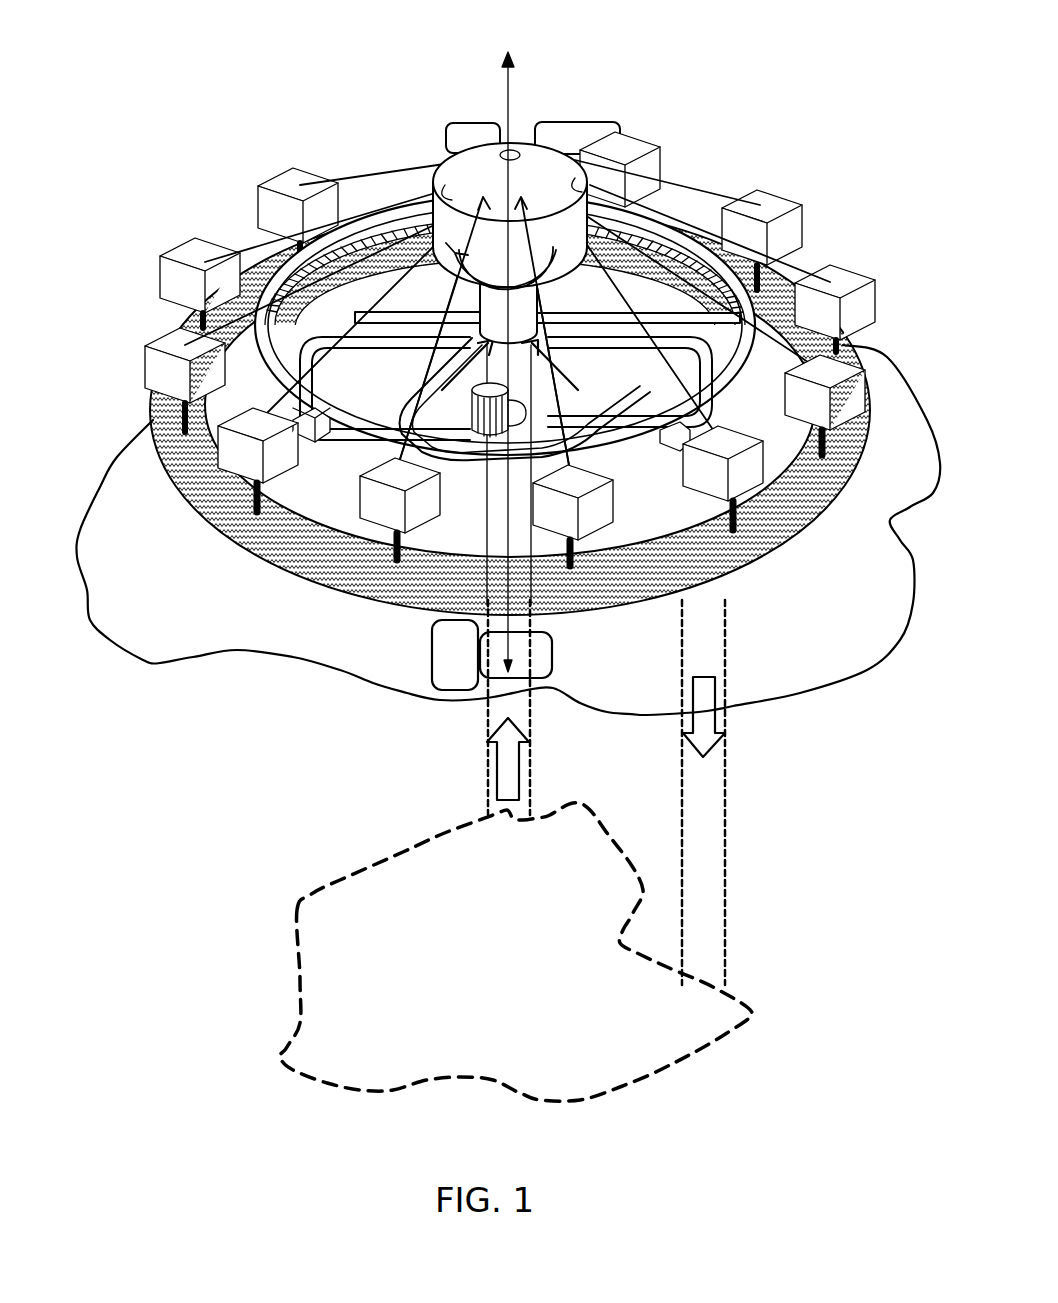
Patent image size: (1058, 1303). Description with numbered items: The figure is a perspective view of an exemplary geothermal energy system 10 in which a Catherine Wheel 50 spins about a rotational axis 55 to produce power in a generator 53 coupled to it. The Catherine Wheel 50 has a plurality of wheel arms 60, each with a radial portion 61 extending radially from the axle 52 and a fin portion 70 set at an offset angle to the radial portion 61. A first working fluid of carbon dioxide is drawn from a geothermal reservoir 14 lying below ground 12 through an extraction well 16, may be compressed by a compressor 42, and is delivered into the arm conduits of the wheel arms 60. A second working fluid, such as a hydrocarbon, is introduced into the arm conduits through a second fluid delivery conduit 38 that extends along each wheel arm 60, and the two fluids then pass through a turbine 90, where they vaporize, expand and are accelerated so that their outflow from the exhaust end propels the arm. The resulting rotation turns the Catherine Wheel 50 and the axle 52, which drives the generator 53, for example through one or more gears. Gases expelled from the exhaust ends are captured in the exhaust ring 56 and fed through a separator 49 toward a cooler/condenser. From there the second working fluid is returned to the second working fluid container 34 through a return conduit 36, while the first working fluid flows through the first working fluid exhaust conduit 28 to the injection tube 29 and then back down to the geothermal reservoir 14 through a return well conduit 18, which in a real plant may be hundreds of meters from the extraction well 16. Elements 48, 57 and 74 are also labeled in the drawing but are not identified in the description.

The geothermal energy system 10 is at (507, 362).
The ground 12 is at (105, 462).
The geothermal reservoir 14 is at (360, 895).
The extraction well 16 is at (487, 720).
The return well conduit 18 is at (700, 830).
The first working fluid exhaust conduit 28 is at (262, 490).
The injection tube 29 is at (200, 520).
The second working fluid container 34 is at (545, 170).
The return conduit 36 is at (305, 160).
The second fluid delivery conduit 38 is at (400, 322).
The compressor 42 is at (435, 640).
The float module 48 is at (185, 262).
The separator 49 is at (327, 430).
The Catherine Wheel 50 is at (585, 395).
The axle 52 is at (470, 525).
The generator 53 is at (478, 470).
The rotational axis 55 is at (508, 105).
The exhaust ring 56 is at (268, 285).
The float module 57 is at (670, 210).
The wheel arms 60 is at (615, 402).
The radial portion 61 is at (575, 330).
The fin portion 70 is at (655, 410).
The linkage arm 74 is at (322, 398).
The turbine 90 is at (340, 343).